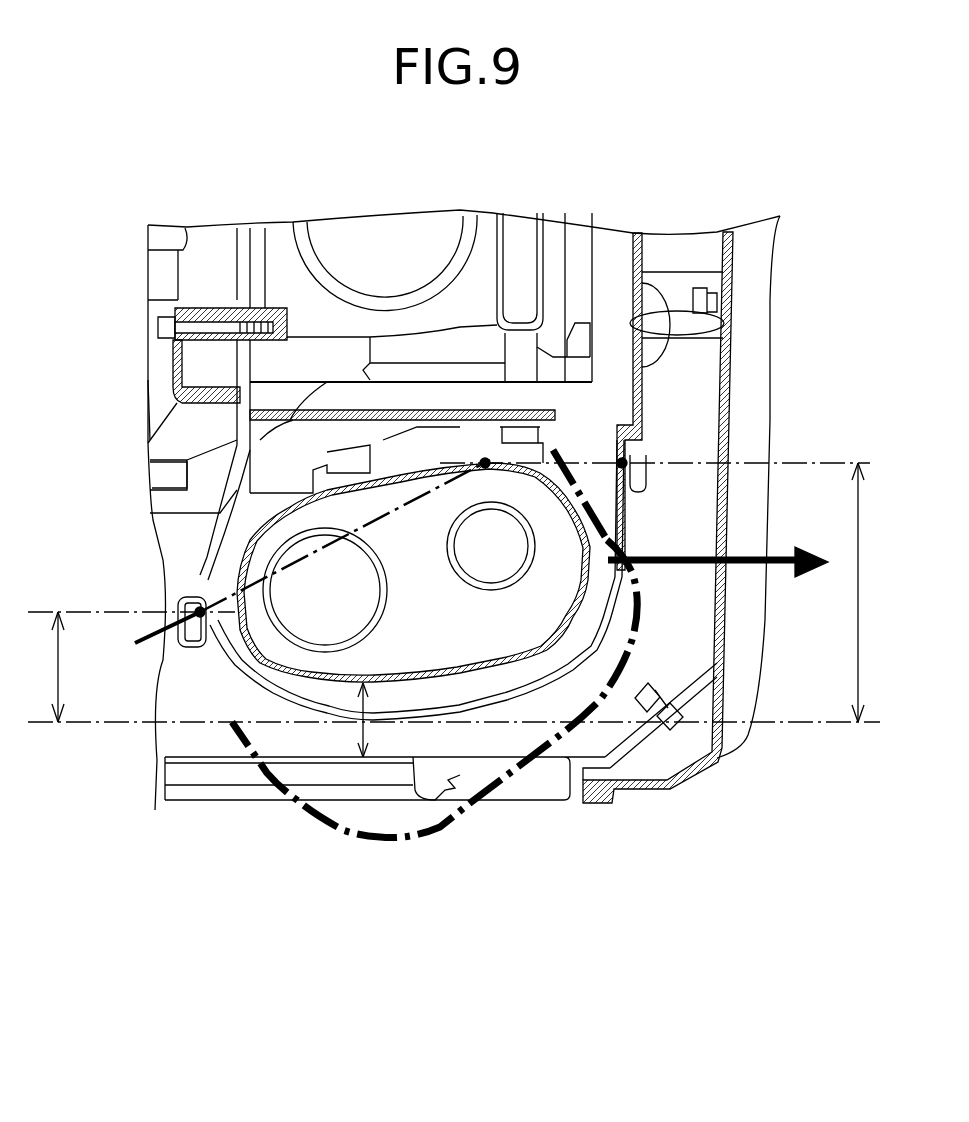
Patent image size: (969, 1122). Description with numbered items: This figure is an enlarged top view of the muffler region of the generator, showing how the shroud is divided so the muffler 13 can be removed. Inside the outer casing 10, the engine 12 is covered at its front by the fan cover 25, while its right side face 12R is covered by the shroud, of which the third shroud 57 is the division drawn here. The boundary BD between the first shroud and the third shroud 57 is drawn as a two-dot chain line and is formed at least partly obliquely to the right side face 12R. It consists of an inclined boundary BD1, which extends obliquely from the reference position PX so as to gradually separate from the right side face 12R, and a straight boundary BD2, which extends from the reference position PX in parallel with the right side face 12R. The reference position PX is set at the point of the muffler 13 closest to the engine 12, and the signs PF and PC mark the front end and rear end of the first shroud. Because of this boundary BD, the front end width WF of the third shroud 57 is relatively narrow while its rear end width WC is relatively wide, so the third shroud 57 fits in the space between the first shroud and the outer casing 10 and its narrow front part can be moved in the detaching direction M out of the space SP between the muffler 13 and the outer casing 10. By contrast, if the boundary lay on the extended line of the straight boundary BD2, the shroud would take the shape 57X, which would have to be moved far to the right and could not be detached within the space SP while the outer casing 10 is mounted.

The engine 12 is at (493, 217).
The fan cover 25 is at (177, 427).
The right side face 12R is at (187, 458).
The muffler 13 is at (555, 540).
The third shroud 57 is at (225, 665).
The third shroud 57X is at (337, 837).
The outer casing 10 is at (537, 800).
The reference position PX is at (474, 451).
The rear end of the first shroud PC is at (636, 451).
The front end of the first shroud PF is at (192, 610).
The boundary BD is at (146, 643).
The inclined boundary BD1 is at (345, 536).
The straight boundary BD2 is at (580, 485).
The front end width WF is at (124, 667).
The rear end width WC is at (466, 592).
The space SP is at (382, 720).
The detaching direction M is at (728, 562).